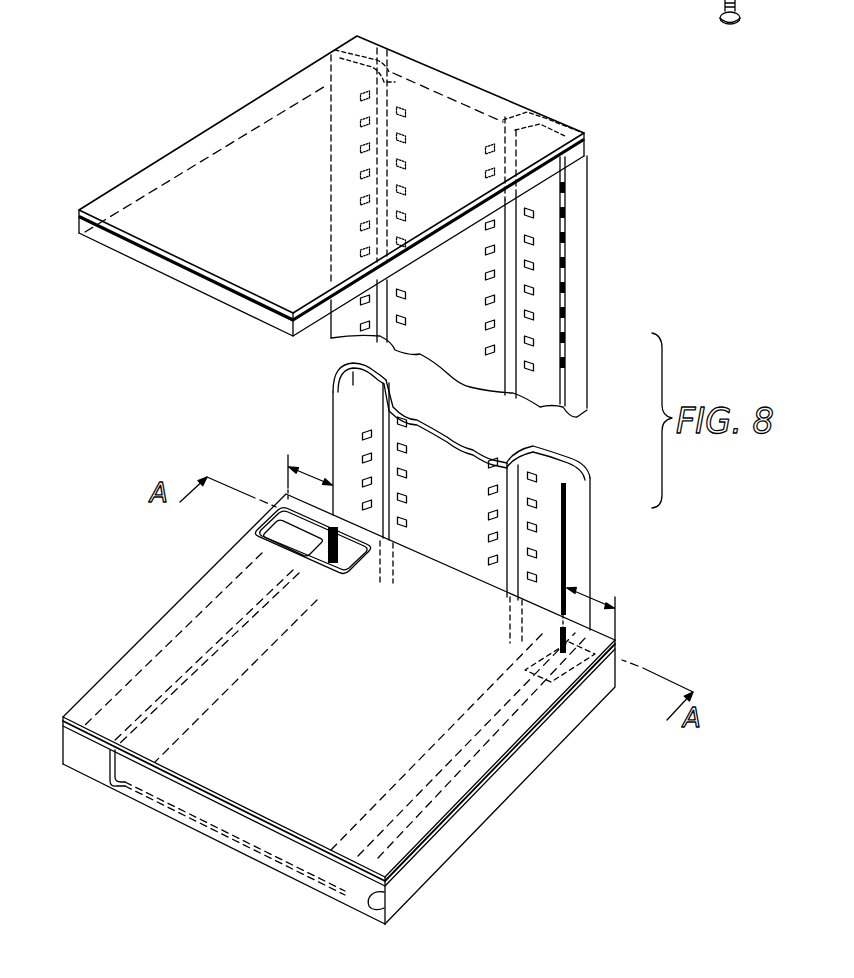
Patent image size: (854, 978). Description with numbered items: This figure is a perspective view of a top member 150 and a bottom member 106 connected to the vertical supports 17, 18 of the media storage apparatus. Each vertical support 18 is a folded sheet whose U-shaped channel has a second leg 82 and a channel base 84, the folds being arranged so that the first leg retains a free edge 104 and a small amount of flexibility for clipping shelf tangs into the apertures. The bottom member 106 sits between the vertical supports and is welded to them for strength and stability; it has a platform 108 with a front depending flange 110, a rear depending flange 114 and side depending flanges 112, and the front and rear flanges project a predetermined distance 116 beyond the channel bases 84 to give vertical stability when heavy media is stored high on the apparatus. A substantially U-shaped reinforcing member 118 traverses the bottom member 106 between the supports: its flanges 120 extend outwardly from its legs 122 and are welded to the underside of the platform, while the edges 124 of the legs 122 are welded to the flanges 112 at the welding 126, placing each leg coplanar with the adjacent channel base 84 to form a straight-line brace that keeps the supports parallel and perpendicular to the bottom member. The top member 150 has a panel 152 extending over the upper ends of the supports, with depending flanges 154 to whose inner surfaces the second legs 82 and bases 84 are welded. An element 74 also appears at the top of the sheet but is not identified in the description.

The vertical support 17 is at (463, 100).
The vertical support 18 is at (510, 321).
The fastener 74 is at (753, 0).
The second leg 82 is at (378, 43).
The channel base 84 is at (345, 30).
The free edge 104 is at (383, 460).
The bottom member 106 is at (329, 720).
The platform 108 is at (98, 693).
The front depending flange 110 is at (488, 805).
The side depending flange 112 is at (387, 905).
The rear depending flange 114 is at (60, 745).
The predetermined distance 116 is at (292, 468).
The reinforcing member 118 is at (216, 828).
The flange 120 is at (170, 710).
The leg 122 is at (222, 657).
The leg edge 124 is at (325, 562).
The welding 126 is at (338, 560).
The top member 150 is at (331, 208).
The panel 152 is at (163, 236).
The depending flange 154 is at (207, 287).